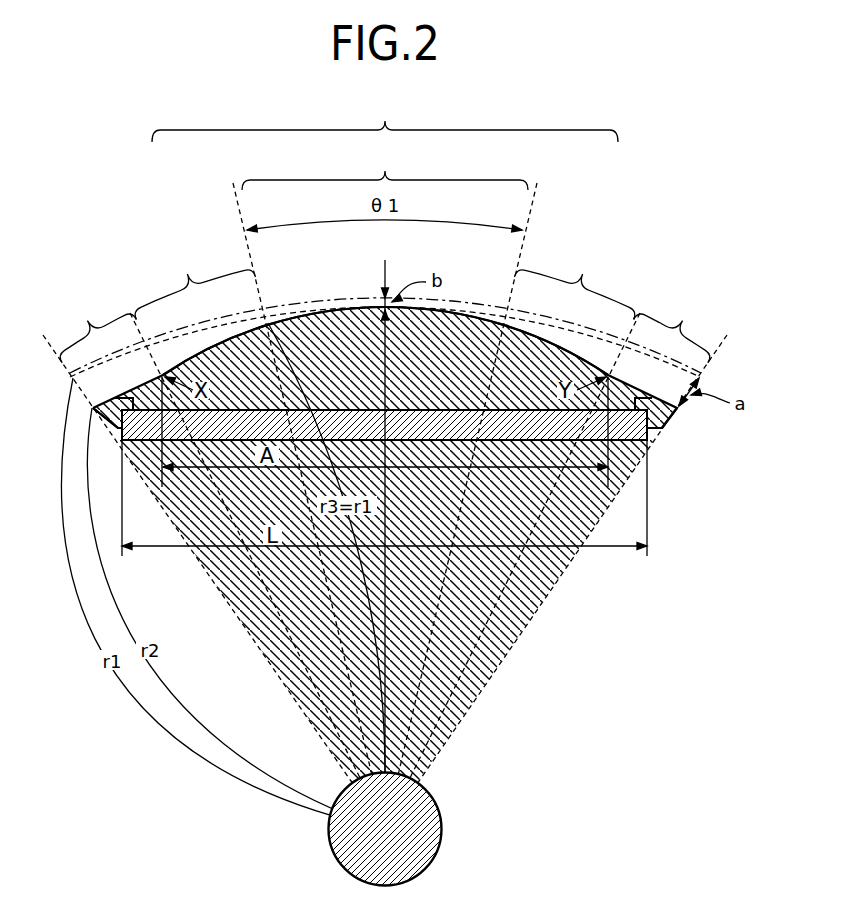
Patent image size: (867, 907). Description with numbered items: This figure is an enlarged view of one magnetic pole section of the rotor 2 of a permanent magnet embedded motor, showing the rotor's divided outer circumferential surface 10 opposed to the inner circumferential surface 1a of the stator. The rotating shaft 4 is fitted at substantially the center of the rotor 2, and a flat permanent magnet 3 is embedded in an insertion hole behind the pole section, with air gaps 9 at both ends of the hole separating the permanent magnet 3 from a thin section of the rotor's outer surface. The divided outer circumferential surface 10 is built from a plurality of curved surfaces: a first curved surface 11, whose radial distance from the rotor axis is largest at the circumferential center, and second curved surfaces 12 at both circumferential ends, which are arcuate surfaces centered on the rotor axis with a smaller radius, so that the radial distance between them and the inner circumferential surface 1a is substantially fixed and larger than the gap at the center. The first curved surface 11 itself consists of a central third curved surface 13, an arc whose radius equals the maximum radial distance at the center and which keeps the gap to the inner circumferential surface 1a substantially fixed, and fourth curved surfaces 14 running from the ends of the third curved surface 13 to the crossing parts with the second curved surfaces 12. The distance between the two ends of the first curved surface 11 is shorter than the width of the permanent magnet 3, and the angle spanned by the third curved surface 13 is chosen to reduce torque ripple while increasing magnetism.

The inner circumferential surface of the stator 1a is at (574, 320).
The rotor 2 is at (580, 362).
The permanent magnet 3 is at (605, 442).
The rotating shaft 4 is at (441, 829).
The air gap 9 is at (118, 423).
The divided outer circumferential surface 10 is at (338, 306).
The first curved surface 11 is at (385, 115).
The second curved surface 12 is at (385, 326).
The third curved surface 13 is at (385, 166).
The fourth curved surface 14 is at (186, 276).